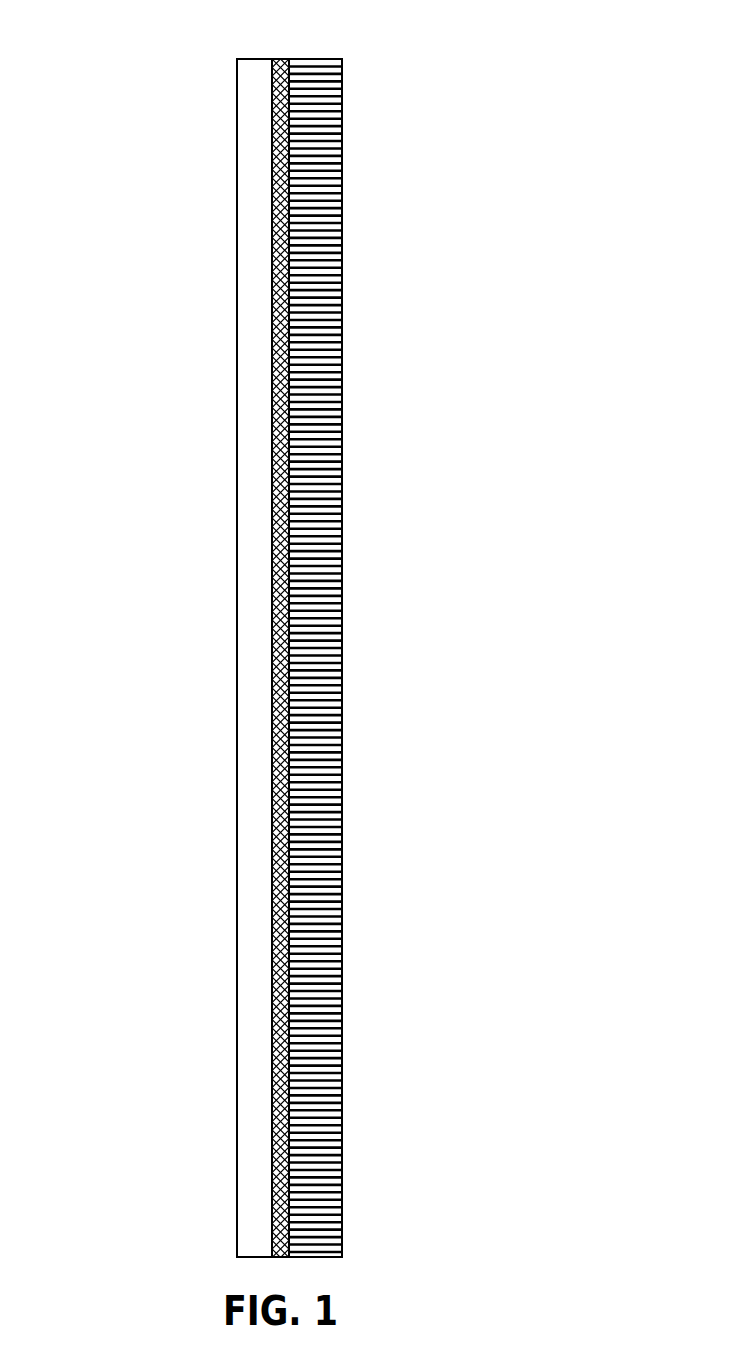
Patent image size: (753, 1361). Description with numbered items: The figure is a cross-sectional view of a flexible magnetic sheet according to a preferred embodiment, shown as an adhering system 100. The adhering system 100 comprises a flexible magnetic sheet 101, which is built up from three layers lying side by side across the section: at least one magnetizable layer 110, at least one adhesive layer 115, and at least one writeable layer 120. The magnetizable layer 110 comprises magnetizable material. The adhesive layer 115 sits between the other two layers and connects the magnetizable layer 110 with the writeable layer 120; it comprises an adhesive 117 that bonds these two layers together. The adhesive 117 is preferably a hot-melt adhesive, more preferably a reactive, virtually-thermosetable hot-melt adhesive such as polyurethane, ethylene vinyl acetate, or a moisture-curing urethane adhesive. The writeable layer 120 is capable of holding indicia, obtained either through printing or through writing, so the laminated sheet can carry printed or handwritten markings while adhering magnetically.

The adhering system 100 is at (103, 52).
The flexible magnetic sheet 101 is at (179, 49).
The magnetizable layer 110 is at (342, 288).
The adhesive layer 115 is at (282, 59).
The adhesive 117 is at (272, 280).
The writeable layer 120 is at (237, 172).